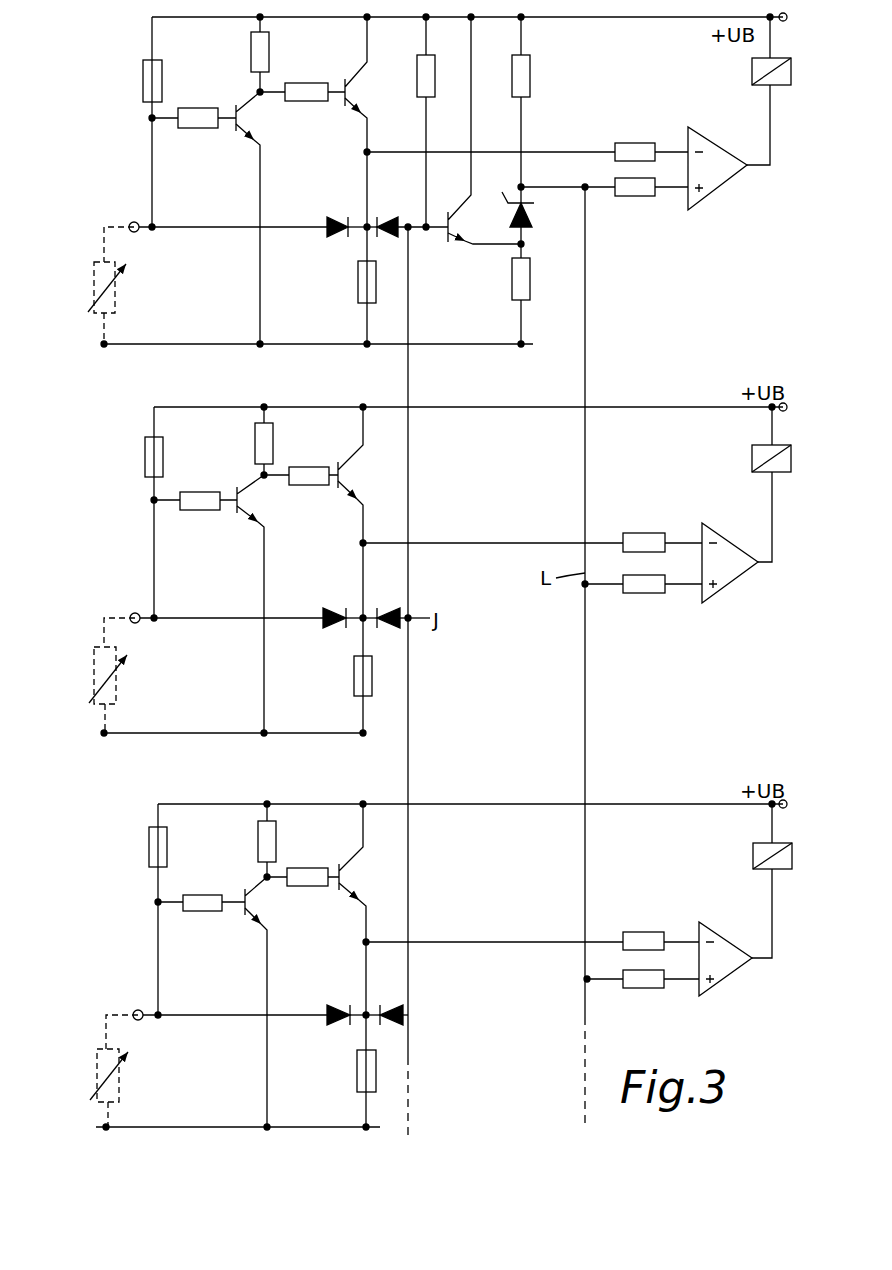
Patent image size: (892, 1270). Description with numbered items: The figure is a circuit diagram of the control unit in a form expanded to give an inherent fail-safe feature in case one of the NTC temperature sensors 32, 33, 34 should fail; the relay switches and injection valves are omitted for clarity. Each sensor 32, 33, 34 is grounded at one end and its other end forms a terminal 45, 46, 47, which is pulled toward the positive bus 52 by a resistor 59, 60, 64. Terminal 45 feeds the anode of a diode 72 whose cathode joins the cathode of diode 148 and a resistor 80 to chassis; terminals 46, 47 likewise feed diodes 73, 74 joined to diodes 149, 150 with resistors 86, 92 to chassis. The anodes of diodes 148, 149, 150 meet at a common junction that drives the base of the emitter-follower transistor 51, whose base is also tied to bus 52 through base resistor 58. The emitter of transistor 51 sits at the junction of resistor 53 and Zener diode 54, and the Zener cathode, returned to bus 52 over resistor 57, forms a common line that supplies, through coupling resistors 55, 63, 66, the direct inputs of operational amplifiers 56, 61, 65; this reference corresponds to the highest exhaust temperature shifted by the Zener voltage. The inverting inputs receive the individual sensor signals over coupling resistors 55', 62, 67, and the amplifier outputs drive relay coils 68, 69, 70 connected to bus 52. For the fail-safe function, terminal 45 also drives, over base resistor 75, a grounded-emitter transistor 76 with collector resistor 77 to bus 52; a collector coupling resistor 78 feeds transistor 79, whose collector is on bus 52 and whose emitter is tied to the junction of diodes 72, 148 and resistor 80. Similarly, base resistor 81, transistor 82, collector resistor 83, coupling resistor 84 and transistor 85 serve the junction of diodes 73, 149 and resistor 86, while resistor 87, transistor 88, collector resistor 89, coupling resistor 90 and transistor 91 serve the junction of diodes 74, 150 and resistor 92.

The temperature sensor 32 is at (116, 292).
The temperature sensor 33 is at (117, 683).
The temperature sensor 34 is at (120, 1082).
The terminal 45 is at (130, 224).
The terminal 46 is at (132, 614).
The terminal 47 is at (135, 1010).
The emitter-follower transistor 51 is at (452, 246).
The positive bus 52 is at (635, 19).
The resistor 53 is at (531, 278).
The Zener diode 54 is at (531, 216).
The coupling resistor 55 is at (651, 207).
The coupling resistor 55' is at (651, 125).
The operational amplifier 56 is at (700, 190).
The resistor 57 is at (522, 62).
The base resistor 58 is at (427, 68).
The resistor 59 is at (156, 80).
The resistor 60 is at (160, 455).
The operational amplifier 61 is at (725, 572).
The coupling resistor 62 is at (643, 541).
The coupling resistor 63 is at (640, 594).
The resistor 64 is at (160, 853).
The operational amplifier 65 is at (715, 970).
The coupling resistor 66 is at (643, 989).
The coupling resistor 67 is at (645, 937).
The relay coil 68 is at (753, 68).
The relay coil 69 is at (752, 450).
The relay coil 70 is at (753, 850).
The diode 72 is at (333, 240).
The diode 73 is at (331, 630).
The diode 74 is at (336, 1028).
The base resistor 75 is at (198, 129).
The transistor 76 is at (247, 141).
The collector resistor 77 is at (262, 58).
The collector coupling resistor 78 is at (300, 102).
The transistor 79 is at (354, 112).
The resistor 80 is at (364, 289).
The base resistor 81 is at (193, 511).
The transistor 82 is at (250, 524).
The collector resistor 83 is at (289, 442).
The coupling resistor 84 is at (305, 486).
The transistor 85 is at (353, 483).
The resistor 86 is at (355, 688).
The resistor 87 is at (191, 911).
The transistor 88 is at (253, 924).
The collector resistor 89 is at (270, 841).
The coupling resistor 90 is at (303, 887).
The transistor 91 is at (355, 880).
The resistor 92 is at (356, 1085).
The diode 148 is at (393, 218).
The diode 149 is at (392, 607).
The diode 150 is at (395, 1004).